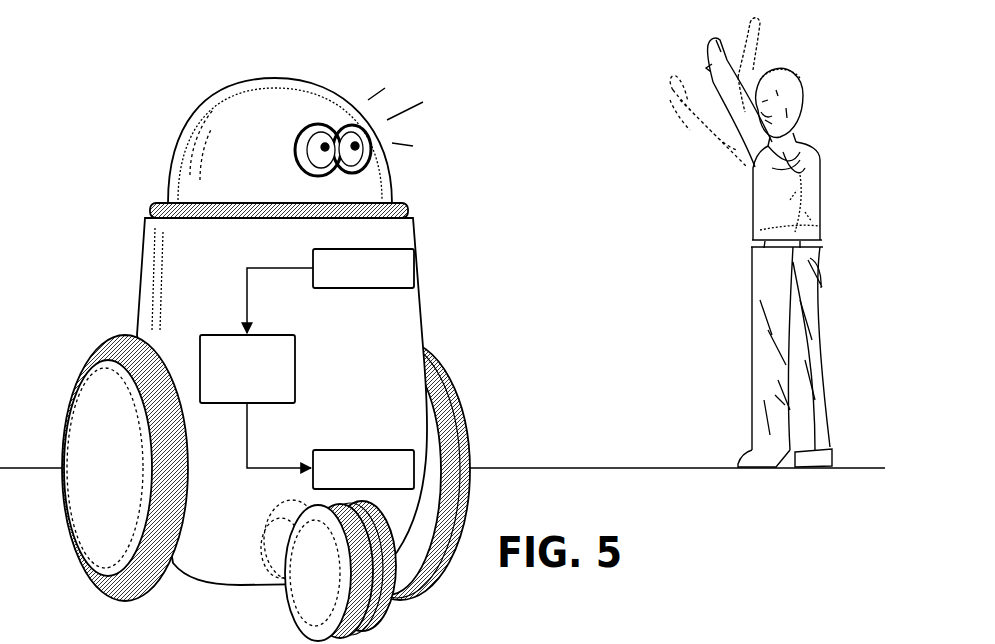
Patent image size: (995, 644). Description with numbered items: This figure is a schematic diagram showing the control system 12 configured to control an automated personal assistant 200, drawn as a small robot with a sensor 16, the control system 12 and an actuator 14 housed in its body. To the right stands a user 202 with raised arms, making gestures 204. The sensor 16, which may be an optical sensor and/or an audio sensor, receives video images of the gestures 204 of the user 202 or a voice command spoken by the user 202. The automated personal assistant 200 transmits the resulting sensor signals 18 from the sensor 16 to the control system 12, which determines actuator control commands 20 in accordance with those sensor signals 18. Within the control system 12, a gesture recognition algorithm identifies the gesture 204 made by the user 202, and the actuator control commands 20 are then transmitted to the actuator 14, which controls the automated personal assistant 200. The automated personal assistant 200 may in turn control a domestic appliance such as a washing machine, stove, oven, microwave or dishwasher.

The automated personal assistant 200 is at (233, 76).
The user 202 is at (828, 206).
The gestures 204 is at (712, 82).
The control system 12 is at (225, 334).
The actuator 14 is at (342, 449).
The sensor 16 is at (343, 289).
The sensor signals 18 is at (244, 294).
The actuator control commands 20 is at (246, 442).